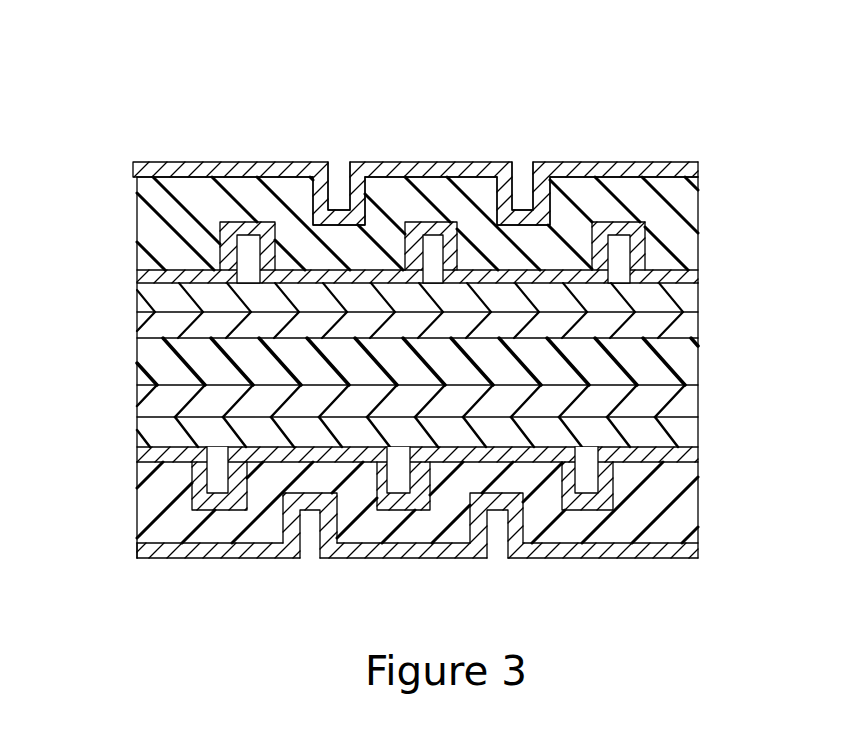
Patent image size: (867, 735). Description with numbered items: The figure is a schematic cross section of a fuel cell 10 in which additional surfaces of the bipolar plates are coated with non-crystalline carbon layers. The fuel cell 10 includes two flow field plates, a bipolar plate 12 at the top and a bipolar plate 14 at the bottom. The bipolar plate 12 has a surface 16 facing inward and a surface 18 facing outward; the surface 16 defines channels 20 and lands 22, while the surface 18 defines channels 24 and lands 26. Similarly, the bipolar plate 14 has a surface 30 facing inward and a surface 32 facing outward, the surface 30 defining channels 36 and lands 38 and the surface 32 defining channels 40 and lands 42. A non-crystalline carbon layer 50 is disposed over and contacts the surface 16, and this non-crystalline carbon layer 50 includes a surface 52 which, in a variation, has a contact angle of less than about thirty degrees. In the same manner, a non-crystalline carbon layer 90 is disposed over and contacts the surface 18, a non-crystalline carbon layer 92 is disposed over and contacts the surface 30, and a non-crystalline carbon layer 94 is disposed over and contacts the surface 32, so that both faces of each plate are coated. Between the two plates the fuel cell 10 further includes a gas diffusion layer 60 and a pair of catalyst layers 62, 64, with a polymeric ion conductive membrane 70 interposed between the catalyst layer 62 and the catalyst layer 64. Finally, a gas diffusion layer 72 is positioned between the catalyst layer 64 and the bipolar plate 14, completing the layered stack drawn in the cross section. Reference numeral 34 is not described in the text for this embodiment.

The fuel cell 10 is at (635, 117).
The bipolar plate 12 is at (118, 180).
The bipolar plate 14 is at (152, 563).
The surface 16 is at (257, 177).
The surface 18 is at (457, 180).
The channels 20 is at (247, 253).
The lands 22 is at (356, 185).
The channels 24 is at (328, 208).
The lands 26 is at (398, 177).
The surface 30 is at (148, 447).
The surface 32 is at (165, 542).
The lower conductive via 34 is at (587, 473).
The channels 36 is at (208, 472).
The lands 38 is at (360, 483).
The channels 40 is at (310, 525).
The lands 42 is at (222, 548).
The non-crystalline carbon layer 50 is at (140, 275).
The surface 52 is at (622, 240).
The gas diffusion layer 60 is at (137, 300).
The catalyst layer 62 is at (699, 322).
The catalyst layer 64 is at (137, 395).
The polymeric ion conductive membrane 70 is at (699, 352).
The gas diffusion layer 72 is at (699, 425).
The non-crystalline carbon layer 90 is at (175, 167).
The non-crystalline carbon layer 92 is at (699, 450).
The non-crystalline carbon layer 94 is at (537, 550).